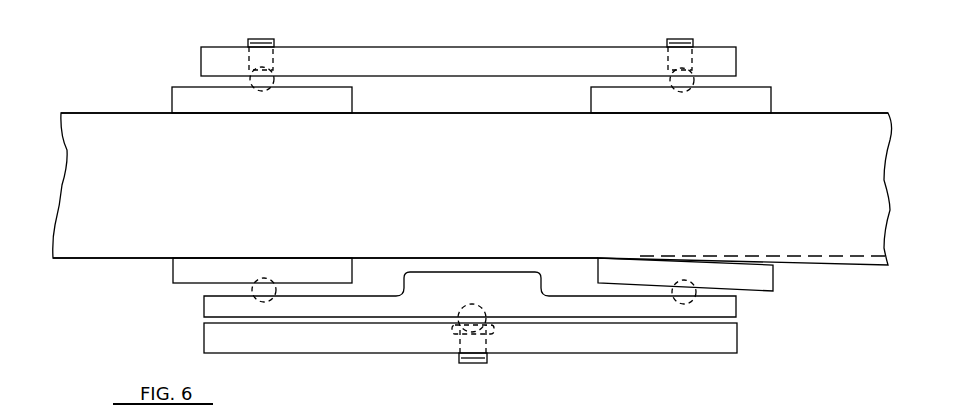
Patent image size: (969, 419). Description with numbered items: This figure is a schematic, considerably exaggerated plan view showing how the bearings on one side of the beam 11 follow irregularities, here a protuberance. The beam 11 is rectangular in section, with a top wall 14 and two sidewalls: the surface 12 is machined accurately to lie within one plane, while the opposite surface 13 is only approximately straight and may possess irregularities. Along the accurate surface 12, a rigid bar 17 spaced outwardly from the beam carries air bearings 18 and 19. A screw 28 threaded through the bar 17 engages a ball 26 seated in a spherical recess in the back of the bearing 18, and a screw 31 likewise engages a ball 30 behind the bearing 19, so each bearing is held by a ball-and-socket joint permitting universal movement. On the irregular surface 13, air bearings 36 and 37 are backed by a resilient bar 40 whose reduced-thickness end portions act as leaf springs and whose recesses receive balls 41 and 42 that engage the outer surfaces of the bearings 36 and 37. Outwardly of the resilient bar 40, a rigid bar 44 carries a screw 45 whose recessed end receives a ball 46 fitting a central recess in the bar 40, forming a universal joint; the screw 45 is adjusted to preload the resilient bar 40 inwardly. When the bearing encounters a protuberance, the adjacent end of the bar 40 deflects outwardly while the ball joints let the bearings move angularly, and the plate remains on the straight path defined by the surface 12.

The beam 11 is at (83, 104).
The sidewall 12 is at (123, 113).
The sidewall 13 is at (93, 260).
The top wall 14 is at (813, 132).
The rigid bar 17 is at (545, 47).
The air bearing 18 is at (771, 88).
The air bearing 19 is at (182, 87).
The ball 26 is at (694, 77).
The screw 28 is at (676, 39).
The ball 30 is at (272, 74).
The screw 31 is at (250, 39).
The air bearing 36 is at (775, 277).
The air bearing 37 is at (173, 271).
The resilient bar 40 is at (652, 308).
The ball 41 is at (698, 289).
The ball 42 is at (258, 289).
The rigid bar 44 is at (585, 355).
The screw 45 is at (463, 361).
The ball 46 is at (483, 312).